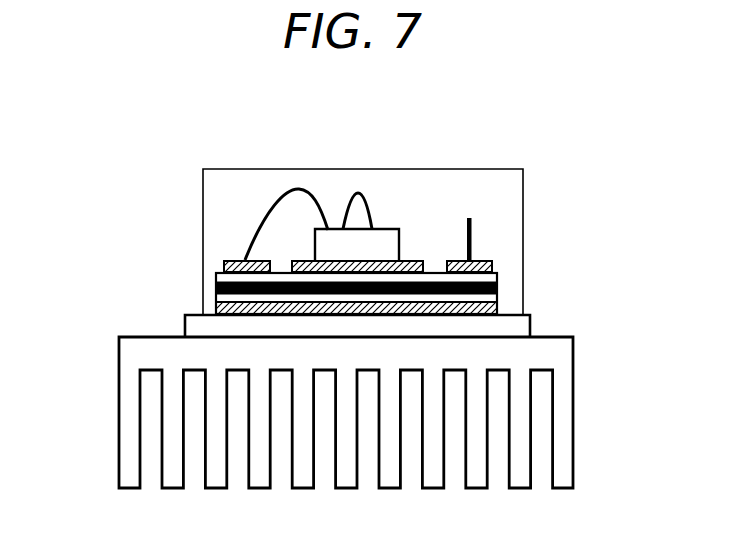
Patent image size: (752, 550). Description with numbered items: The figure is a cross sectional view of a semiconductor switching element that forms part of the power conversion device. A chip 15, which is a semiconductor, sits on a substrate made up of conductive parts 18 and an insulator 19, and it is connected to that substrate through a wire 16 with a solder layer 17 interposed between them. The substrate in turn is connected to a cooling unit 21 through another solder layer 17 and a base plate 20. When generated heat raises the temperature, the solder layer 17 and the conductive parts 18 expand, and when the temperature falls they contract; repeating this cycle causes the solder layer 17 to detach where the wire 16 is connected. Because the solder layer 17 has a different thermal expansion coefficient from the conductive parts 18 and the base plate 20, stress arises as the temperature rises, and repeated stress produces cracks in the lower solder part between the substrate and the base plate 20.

The chip 15 is at (337, 242).
The wire 16 is at (263, 225).
The solder layer 17 is at (437, 300).
The conductive parts 18 is at (498, 294).
The insulator 19 is at (215, 285).
The base plate 20 is at (518, 327).
The cooling unit 21 is at (135, 357).